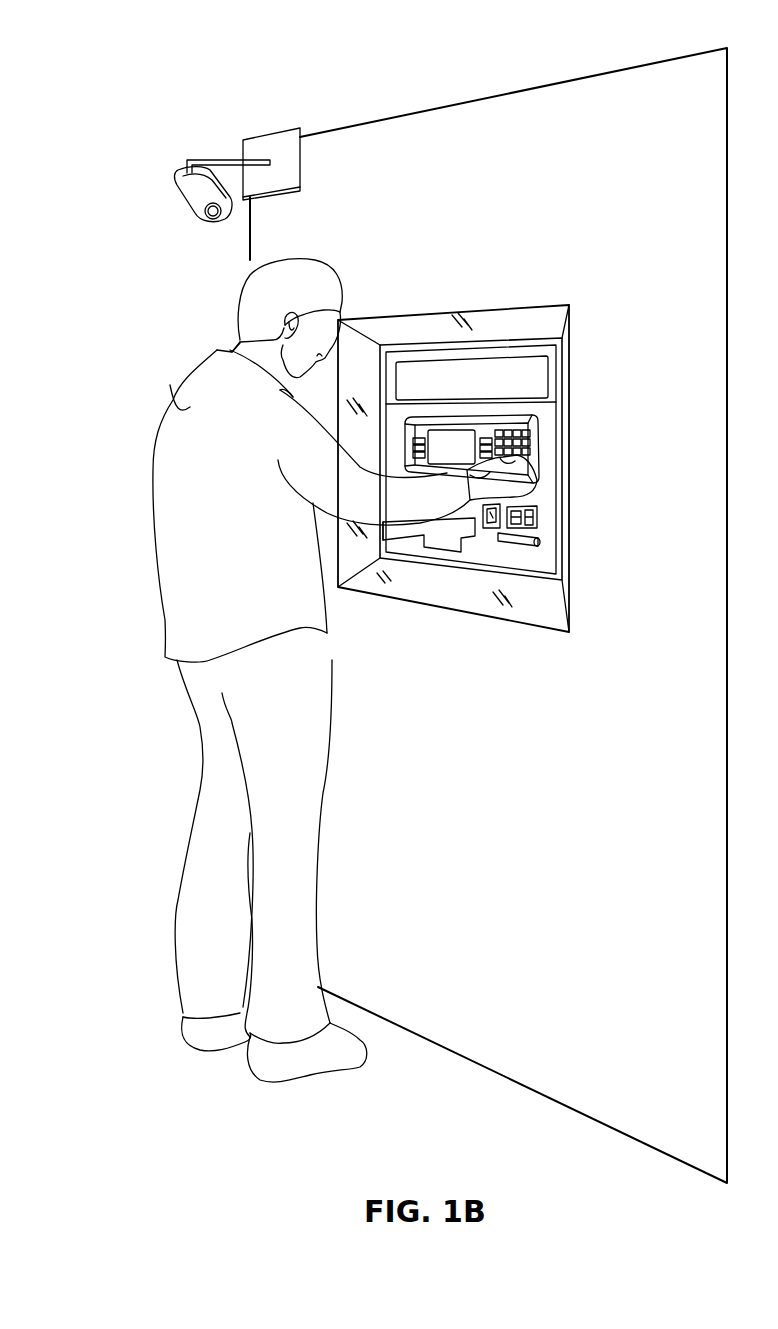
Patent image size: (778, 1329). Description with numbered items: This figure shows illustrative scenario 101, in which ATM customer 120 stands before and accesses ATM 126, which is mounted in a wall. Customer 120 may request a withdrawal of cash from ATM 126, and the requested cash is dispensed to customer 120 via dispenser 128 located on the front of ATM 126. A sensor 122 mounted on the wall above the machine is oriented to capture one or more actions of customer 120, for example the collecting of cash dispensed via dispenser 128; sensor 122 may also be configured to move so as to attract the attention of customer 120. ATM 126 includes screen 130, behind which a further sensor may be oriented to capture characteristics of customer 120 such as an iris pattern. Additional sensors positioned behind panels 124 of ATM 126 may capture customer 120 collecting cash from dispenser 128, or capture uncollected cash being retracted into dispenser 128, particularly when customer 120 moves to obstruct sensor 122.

The scenario 101 is at (154, 55).
The ATM customer 120 is at (178, 408).
The sensor 122 is at (183, 190).
The panels 124 is at (484, 318).
The ATM 126 is at (530, 497).
The dispenser 128 is at (443, 533).
The screen 130 is at (533, 388).